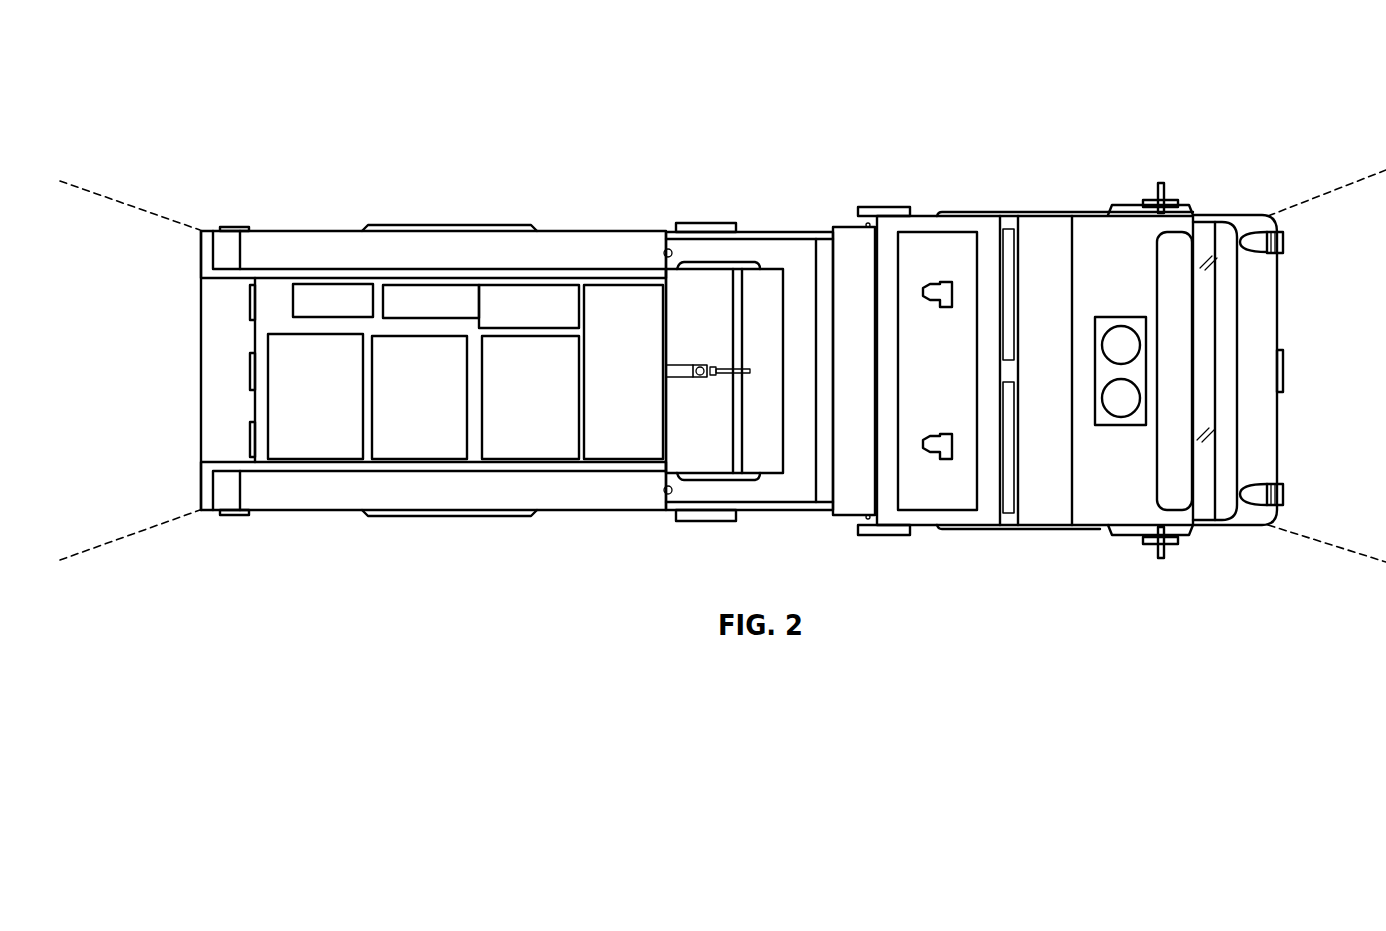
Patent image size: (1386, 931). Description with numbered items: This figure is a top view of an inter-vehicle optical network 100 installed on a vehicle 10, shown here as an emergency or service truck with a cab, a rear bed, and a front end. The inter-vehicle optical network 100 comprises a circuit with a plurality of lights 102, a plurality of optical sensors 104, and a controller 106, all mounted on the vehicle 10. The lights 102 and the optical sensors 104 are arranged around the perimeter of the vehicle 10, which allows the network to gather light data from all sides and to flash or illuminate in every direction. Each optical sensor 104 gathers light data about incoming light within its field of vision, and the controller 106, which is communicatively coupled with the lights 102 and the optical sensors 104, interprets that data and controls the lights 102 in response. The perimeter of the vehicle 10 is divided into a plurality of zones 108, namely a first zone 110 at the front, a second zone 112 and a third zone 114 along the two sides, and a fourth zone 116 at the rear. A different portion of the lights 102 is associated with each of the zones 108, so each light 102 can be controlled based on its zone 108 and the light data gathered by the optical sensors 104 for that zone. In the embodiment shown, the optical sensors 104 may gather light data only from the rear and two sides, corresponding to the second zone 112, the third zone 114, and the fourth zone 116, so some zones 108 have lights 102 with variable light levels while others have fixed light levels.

The inter-vehicle optical network 100 is at (208, 118).
The vehicle 10 is at (1050, 243).
The light 102 is at (250, 300).
The optical sensor 104 is at (240, 228).
The controller 106 is at (1105, 420).
The zones 108 is at (440, 543).
The first zone 110 is at (1354, 310).
The second zone 112 is at (506, 210).
The third zone 114 is at (506, 562).
The fourth zone 116 is at (136, 392).